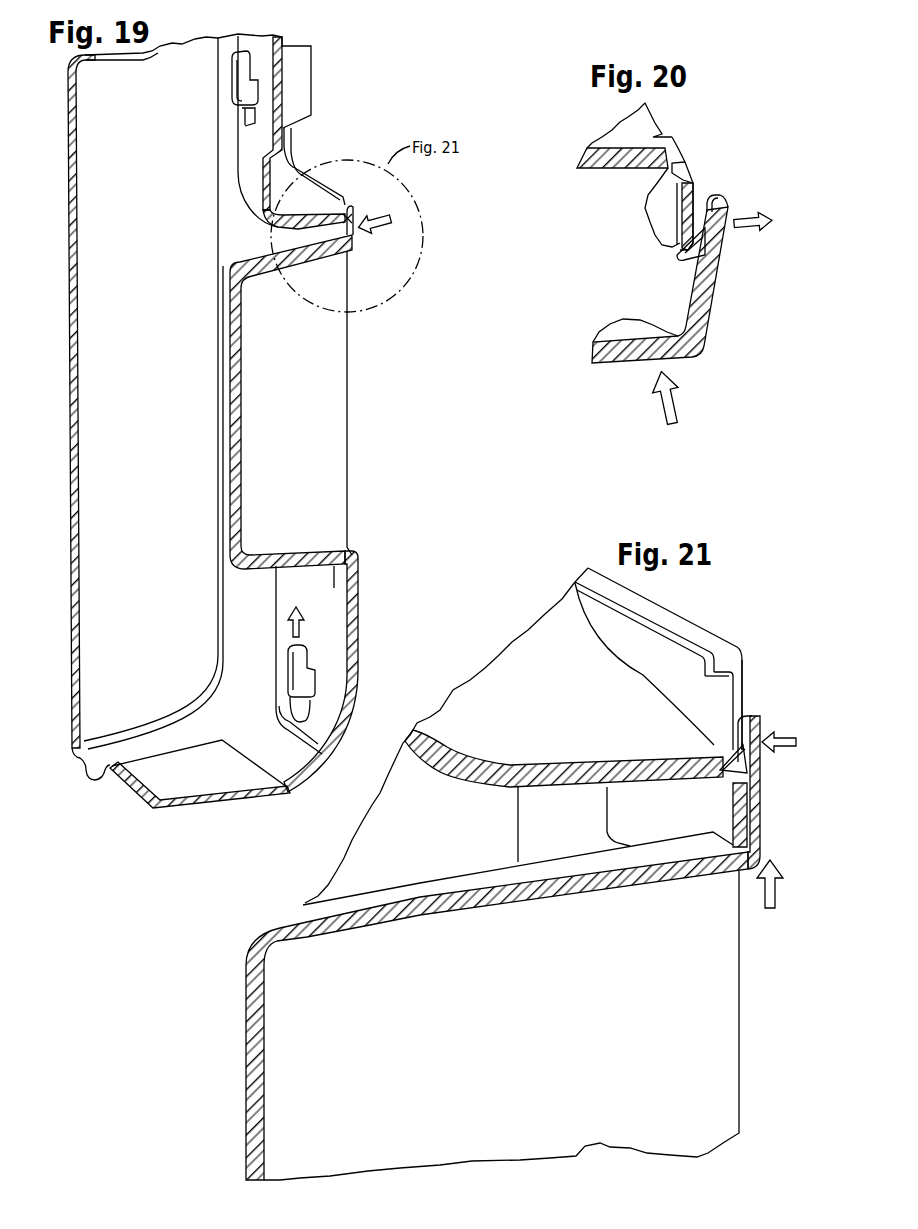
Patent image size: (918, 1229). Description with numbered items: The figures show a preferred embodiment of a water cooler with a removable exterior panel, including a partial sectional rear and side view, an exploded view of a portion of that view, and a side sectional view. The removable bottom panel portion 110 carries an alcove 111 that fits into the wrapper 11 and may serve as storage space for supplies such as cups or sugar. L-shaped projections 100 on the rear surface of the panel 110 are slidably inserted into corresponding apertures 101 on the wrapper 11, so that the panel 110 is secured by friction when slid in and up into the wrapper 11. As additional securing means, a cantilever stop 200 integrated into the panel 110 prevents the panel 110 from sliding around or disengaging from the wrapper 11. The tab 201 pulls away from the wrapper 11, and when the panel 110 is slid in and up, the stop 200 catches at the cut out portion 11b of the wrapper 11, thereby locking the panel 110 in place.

In FIG. 19, the wrapper 11 is at (156, 358).
In FIG. 20, the wrapper 11 is at (645, 143).
In FIG. 21, the wrapper 11 is at (445, 830).
In FIG. 20, the cut out portion 11b is at (694, 158).
In FIG. 21, the cut out portion 11b is at (723, 746).
In FIG. 19, the L-shaped rear surface projection 100 is at (258, 60).
In FIG. 19, the aperture 101 is at (268, 124).
In FIG. 19, the bottom panel portion 110 is at (366, 590).
In FIG. 20, the bottom panel portion 110 is at (716, 343).
In FIG. 21, the bottom panel portion 110 is at (770, 841).
In FIG. 19, the alcove 111 is at (312, 405).
In FIG. 21, the alcove 111 is at (518, 1050).
In FIG. 19, the stop 200 is at (358, 238).
In FIG. 20, the stop 200 is at (729, 261).
In FIG. 21, the stop 200 is at (748, 767).
In FIG. 19, the tab 201 is at (358, 200).
In FIG. 20, the tab 201 is at (711, 204).
In FIG. 21, the tab 201 is at (742, 724).